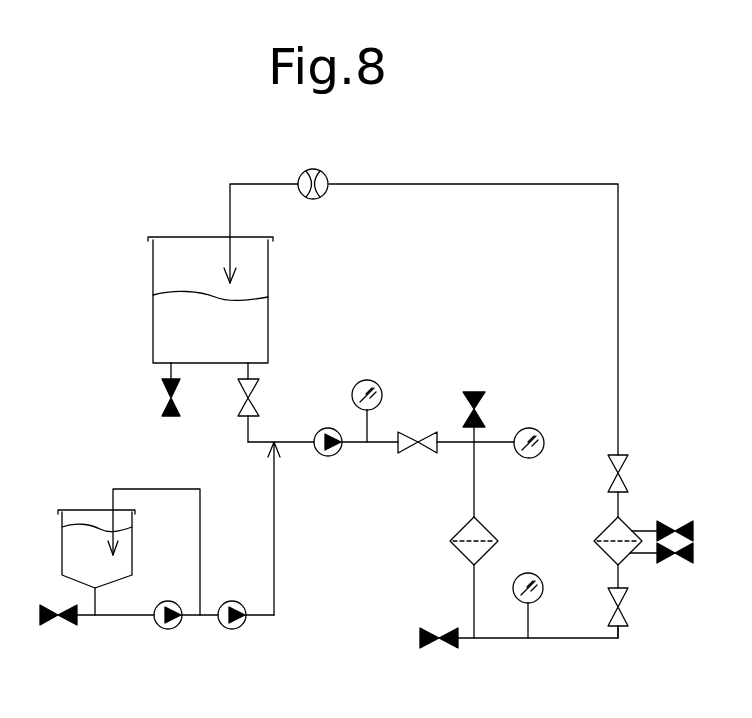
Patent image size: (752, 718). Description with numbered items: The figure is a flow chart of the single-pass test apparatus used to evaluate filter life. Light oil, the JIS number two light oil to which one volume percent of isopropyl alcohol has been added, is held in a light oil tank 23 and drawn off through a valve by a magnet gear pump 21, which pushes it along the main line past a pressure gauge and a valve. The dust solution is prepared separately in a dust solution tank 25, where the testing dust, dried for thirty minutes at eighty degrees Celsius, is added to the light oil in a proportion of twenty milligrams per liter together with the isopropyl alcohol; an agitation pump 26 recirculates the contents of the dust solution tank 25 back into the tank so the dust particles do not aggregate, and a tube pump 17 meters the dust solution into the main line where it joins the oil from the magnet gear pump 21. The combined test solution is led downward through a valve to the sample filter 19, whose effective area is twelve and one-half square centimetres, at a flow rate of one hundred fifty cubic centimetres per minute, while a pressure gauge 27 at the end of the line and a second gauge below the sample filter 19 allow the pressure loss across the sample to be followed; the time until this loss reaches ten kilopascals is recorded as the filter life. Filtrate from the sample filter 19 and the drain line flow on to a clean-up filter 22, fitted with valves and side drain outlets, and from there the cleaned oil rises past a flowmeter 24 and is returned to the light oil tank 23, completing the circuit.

The tube pump 17 is at (235, 629).
The sample filter 19 is at (458, 530).
The magnet gear pump 21 is at (333, 456).
The clean-up filter 22 is at (604, 530).
The light oil tank 23 is at (174, 237).
The flowmeter 24 is at (306, 171).
The dust solution tank 25 is at (82, 510).
The agitation pump 26 is at (170, 629).
The pressure gauge 27 is at (535, 428).